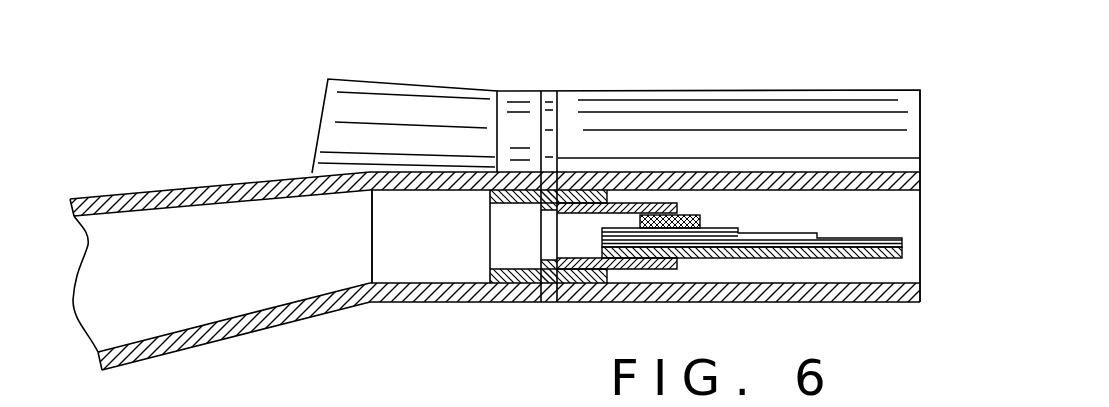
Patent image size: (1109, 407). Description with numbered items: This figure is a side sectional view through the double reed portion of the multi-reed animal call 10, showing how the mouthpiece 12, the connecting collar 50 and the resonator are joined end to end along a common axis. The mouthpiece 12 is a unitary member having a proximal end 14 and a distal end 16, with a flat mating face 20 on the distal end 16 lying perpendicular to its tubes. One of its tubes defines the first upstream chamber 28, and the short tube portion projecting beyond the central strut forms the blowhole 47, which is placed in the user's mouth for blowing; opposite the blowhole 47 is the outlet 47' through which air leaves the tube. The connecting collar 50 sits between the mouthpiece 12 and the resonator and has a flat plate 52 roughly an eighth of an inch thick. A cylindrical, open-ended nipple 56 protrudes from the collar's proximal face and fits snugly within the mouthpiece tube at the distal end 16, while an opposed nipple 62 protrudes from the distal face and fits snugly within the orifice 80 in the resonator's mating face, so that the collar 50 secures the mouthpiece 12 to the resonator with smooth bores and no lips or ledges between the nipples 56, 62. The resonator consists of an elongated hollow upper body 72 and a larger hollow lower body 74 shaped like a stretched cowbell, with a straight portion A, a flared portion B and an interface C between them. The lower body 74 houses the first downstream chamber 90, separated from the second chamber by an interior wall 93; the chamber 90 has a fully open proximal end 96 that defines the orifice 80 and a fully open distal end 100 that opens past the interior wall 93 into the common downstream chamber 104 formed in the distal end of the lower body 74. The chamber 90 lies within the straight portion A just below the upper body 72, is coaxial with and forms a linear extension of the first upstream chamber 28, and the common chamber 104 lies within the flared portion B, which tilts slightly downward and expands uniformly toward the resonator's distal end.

The multi-reed animal call 10 is at (792, 71).
The mouthpiece 12 is at (873, 107).
The proximal end 14 is at (934, 123).
The distal end 16 is at (574, 79).
The flat mating face 20 is at (560, 130).
The first upstream chamber 28 is at (842, 272).
The blowhole 47 is at (781, 257).
The outlet 47' is at (643, 122).
The connecting collar 50 is at (545, 300).
The plate 52 is at (548, 100).
The nipple 56 is at (600, 300).
The nipple 62 is at (485, 174).
The upper body 72 is at (410, 97).
The lower body 74 is at (227, 184).
The orifice 80 is at (521, 166).
The first downstream chamber 90 is at (460, 257).
The interior wall 93 is at (438, 217).
The proximal end 96 is at (533, 242).
The distal end 100 is at (356, 243).
The common downstream chamber 104 is at (117, 243).
The straight portion A is at (461, 317).
The flared portion B is at (280, 337).
The interface C is at (381, 314).